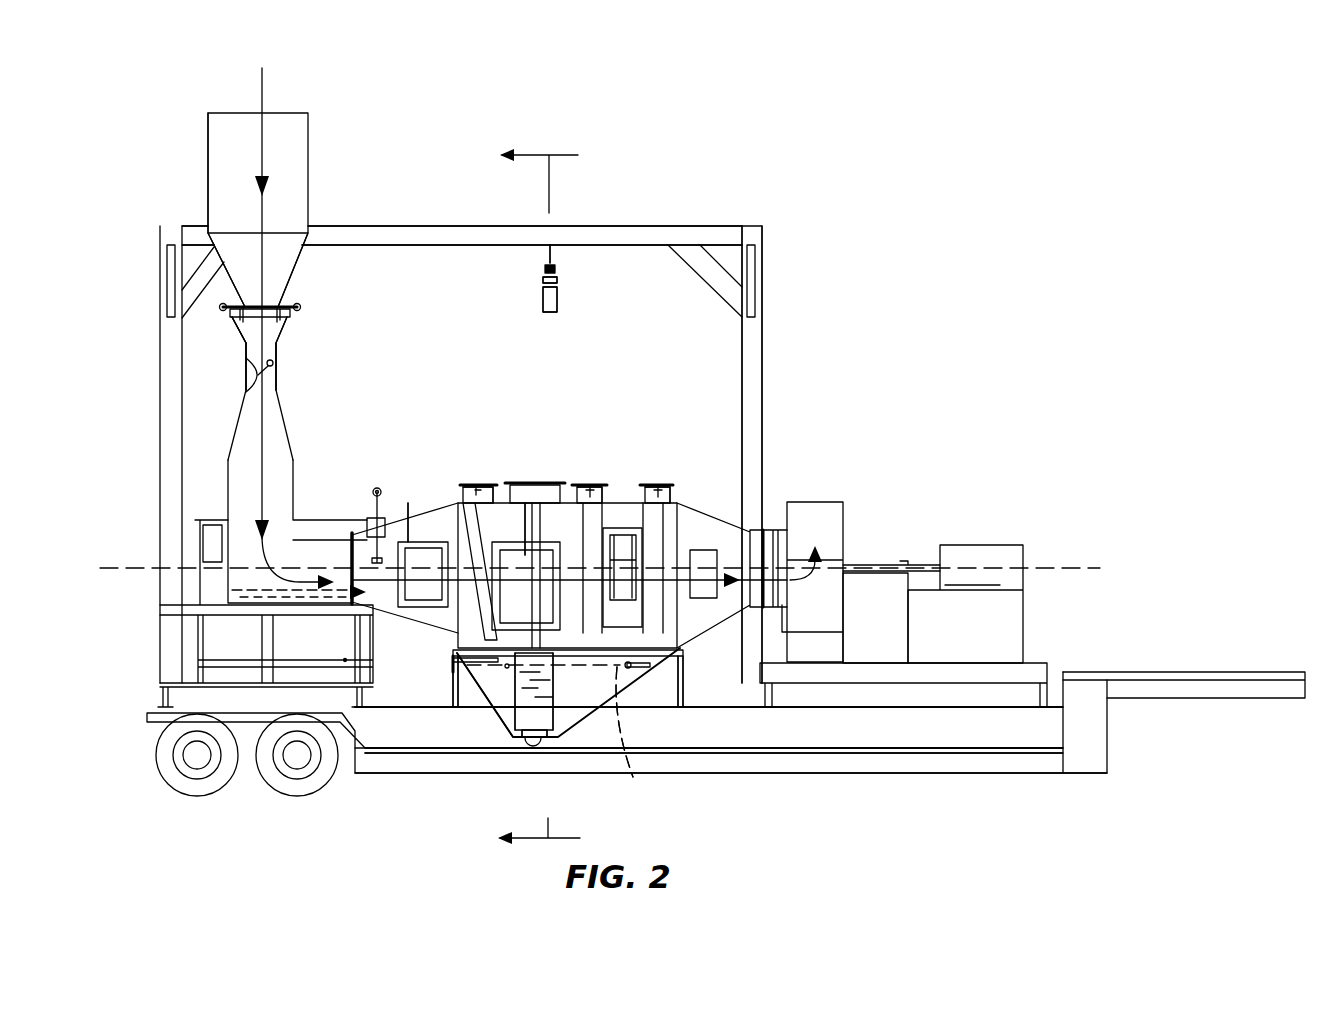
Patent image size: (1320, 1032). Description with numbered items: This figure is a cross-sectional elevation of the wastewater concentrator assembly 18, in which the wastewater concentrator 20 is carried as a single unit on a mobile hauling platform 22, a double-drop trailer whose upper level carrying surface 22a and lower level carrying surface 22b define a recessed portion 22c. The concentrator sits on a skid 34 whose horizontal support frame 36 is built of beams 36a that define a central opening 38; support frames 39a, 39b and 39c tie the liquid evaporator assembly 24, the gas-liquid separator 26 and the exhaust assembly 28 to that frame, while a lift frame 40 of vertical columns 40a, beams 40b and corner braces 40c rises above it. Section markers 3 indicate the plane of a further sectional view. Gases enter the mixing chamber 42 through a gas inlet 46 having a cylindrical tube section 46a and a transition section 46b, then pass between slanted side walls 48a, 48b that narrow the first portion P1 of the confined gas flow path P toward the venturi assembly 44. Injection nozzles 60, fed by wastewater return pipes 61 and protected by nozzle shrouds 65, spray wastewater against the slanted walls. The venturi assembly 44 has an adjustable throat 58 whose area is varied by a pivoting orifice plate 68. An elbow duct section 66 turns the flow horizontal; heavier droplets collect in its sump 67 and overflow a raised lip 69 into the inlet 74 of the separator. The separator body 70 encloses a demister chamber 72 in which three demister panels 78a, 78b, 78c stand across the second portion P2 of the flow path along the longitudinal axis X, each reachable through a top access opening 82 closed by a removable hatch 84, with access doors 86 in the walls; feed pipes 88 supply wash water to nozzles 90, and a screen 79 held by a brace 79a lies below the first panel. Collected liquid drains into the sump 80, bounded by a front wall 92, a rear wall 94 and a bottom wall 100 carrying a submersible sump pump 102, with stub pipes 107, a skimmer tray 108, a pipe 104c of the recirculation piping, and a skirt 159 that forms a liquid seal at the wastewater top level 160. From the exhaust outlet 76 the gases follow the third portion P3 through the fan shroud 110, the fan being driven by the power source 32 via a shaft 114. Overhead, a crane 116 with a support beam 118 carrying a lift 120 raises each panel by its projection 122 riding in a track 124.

The section line 3- 3 is at (531, 498).
The wastewater concentrator assembly 18 is at (868, 145).
The wastewater concentrator 20 is at (950, 720).
The mobile hauling platform 22 is at (1220, 672).
The upper level carrying surface 22a is at (250, 713).
The lower level carrying surface 22b is at (375, 765).
The recessed portion 22c is at (893, 737).
The liquid evaporator assembly 24 is at (226, 442).
The gas-liquid separator 26 is at (447, 496).
The exhaust assembly 28 is at (837, 492).
The power source 32 is at (980, 545).
The skid 34 is at (755, 226).
The horizontal support frame 36 is at (1050, 695).
The beams 36a is at (815, 700).
The central opening 38 is at (660, 712).
The support frame 39a is at (190, 607).
The support frame 39b is at (452, 658).
The support frame 39c is at (1030, 675).
The lift frame 40 is at (702, 226).
The vertical columns 40a is at (762, 325).
The longitudinal beams and cross-beams 40b is at (642, 226).
The corner braces 40c is at (712, 275).
The mixing chamber 42 is at (232, 322).
The venturi assembly 44 is at (248, 362).
The gas inlet 46 is at (290, 112).
The cylindrical tube section 46a is at (207, 175).
The transition section 46b is at (215, 240).
The slanted side wall 48a is at (240, 330).
The slanted side wall 48b is at (280, 330).
The adjustable throat 58 is at (248, 375).
The injection nozzles 60 is at (290, 313).
The wastewater return pipes 61 is at (220, 307).
The nozzle shrouds 65 is at (280, 330).
The elbow duct section 66 is at (294, 498).
The sump 67 is at (245, 598).
The orifice plate 68 is at (273, 366).
The raised lip 69 is at (312, 598).
The body 70 is at (455, 630).
The demister chamber 72 is at (556, 538).
The inlet 74 is at (367, 520).
The exhaust outlet 76 is at (757, 532).
The demister panel 78a is at (488, 500).
The demister panel 78b is at (600, 500).
The demister panel 78c is at (672, 500).
The screen 79 is at (468, 680).
The brace 79a is at (496, 715).
The sump 80 is at (577, 713).
The top access opening 82 is at (470, 483).
The removable hatch 84 is at (466, 483).
The access doors 86 is at (409, 500).
The feed pipes 88 is at (377, 490).
The nozzles 90 is at (622, 577).
The front wall 92 is at (502, 668).
The rear wall 94 is at (630, 683).
The bottom wall 100 is at (533, 740).
The submersible sump pump 102 is at (520, 700).
The top cover 104c is at (548, 484).
The stub pipes 107 is at (452, 695).
The skimmer tray 108 is at (562, 655).
The shroud 110 is at (843, 520).
The shaft 114 is at (885, 562).
The crane 116 is at (572, 263).
The support beam 118 is at (548, 258).
The lift 120 is at (545, 305).
The projection 122 is at (487, 503).
The track 124 is at (558, 290).
The skirt 159 is at (470, 667).
The top level 160 is at (633, 736).
The confined gas flow path P is at (264, 96).
The first portion P1 is at (264, 220).
The second portion P2 is at (703, 545).
The third portion P3 is at (797, 570).
The longitudinal axis X is at (1075, 567).